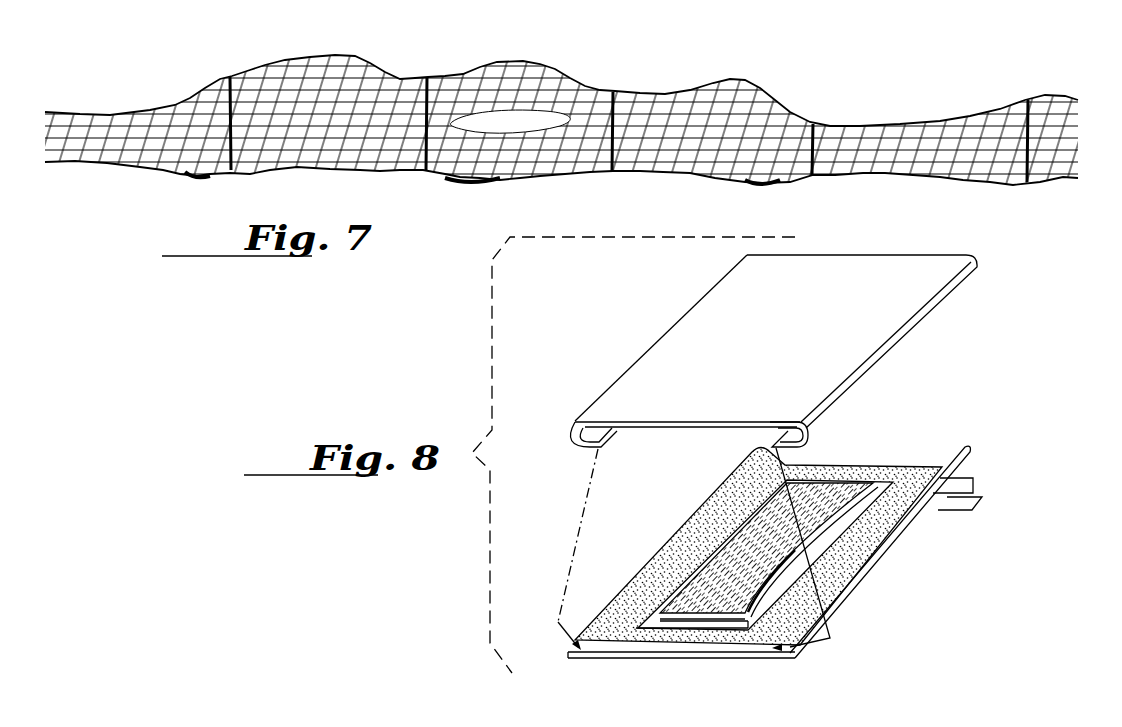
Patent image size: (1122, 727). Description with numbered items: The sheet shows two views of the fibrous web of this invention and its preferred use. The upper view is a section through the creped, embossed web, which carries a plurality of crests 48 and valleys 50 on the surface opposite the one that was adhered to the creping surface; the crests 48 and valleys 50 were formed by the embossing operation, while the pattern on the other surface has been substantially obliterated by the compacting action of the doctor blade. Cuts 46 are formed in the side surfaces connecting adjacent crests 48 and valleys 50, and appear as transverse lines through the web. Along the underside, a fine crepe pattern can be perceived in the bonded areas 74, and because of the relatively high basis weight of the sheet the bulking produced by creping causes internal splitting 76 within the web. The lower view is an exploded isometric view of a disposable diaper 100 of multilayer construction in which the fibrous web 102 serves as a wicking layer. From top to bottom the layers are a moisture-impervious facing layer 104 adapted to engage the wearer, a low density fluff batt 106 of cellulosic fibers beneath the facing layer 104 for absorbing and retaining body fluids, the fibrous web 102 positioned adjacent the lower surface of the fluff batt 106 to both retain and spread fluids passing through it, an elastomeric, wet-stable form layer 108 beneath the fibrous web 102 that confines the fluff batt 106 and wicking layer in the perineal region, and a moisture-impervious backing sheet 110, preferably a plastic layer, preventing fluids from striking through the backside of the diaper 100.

In FIG. 7, the cuts 46 is at (840, 133).
In FIG. 7, the crests 48 is at (303, 61).
In FIG. 7, the valleys 50 is at (447, 78).
In FIG. 7, the bonded areas 74 is at (185, 177).
In FIG. 7, the internal splitting 76 is at (532, 125).
In FIG. 8, the disposable diaper 100 is at (978, 348).
In FIG. 8, the fibrous web 102 is at (882, 486).
In FIG. 8, the moisture-impervious facing layer 104 is at (928, 268).
In FIG. 8, the low density fluff batt 106 is at (825, 490).
In FIG. 8, the elastomeric wet-stable form layer 108 is at (917, 482).
In FIG. 8, the moisture-impervious backing sheet 110 is at (890, 546).